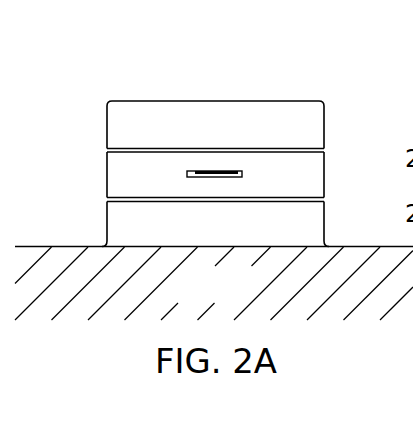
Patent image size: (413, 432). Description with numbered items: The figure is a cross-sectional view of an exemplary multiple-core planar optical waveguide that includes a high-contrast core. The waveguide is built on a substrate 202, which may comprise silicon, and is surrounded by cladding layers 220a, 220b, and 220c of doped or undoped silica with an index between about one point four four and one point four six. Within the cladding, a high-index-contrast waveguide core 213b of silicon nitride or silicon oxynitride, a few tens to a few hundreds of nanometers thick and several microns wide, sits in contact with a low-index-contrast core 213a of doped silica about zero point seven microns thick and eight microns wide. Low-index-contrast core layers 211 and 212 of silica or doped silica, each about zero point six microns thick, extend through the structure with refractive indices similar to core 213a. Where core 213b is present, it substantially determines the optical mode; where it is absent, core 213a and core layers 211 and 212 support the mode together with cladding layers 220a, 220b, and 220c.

The substrate 202 is at (228, 294).
The low-index-contrast core layer 211 is at (268, 198).
The low-index-contrast core layer 212 is at (160, 148).
The low-index-contrast core 213a is at (241, 171).
The high-index-contrast waveguide core 213b is at (217, 170).
The cladding layer 220a is at (137, 232).
The cladding layer 220b is at (128, 185).
The cladding layer 220c is at (125, 128).